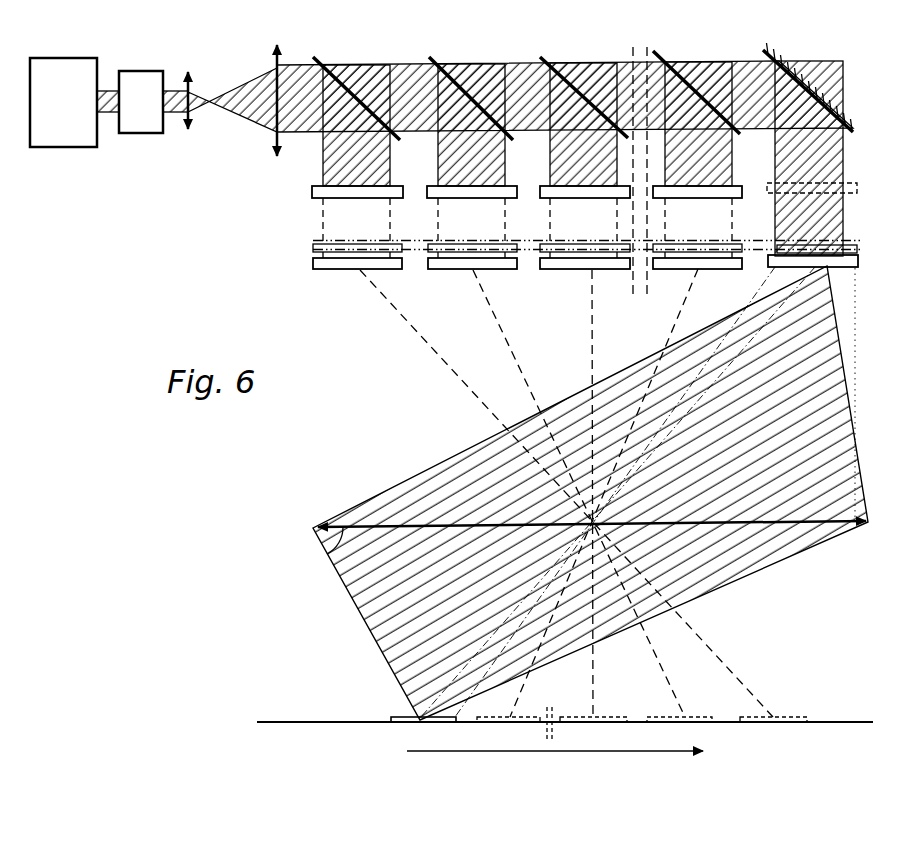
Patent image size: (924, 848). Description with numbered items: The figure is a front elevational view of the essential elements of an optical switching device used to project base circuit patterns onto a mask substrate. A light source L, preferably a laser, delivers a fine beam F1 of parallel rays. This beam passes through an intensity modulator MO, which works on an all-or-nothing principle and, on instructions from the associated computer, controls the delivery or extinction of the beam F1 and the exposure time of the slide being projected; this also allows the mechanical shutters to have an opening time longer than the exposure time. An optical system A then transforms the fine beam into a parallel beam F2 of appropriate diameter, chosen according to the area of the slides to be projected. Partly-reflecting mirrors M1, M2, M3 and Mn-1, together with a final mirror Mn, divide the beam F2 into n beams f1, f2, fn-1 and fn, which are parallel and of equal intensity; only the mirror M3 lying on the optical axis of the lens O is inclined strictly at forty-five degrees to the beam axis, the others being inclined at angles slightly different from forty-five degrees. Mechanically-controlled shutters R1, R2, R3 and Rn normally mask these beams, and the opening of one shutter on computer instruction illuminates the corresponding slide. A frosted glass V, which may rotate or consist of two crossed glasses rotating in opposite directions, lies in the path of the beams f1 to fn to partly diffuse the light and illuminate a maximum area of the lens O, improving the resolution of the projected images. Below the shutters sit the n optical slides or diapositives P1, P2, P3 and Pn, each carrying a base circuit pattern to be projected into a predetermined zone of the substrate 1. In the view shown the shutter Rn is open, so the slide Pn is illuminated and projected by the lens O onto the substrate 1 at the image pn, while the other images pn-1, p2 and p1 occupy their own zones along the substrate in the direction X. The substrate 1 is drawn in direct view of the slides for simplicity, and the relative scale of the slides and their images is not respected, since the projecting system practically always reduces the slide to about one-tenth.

The light source L is at (54, 135).
The fine beam F1 is at (110, 113).
The intensity modulator MO is at (138, 115).
The beam expander lens system A is at (277, 153).
The parallel beam F2 is at (302, 120).
The partly-reflecting mirror M1 is at (318, 56).
The partly-reflecting mirror M2 is at (434, 56).
The partly-reflecting mirror M3 is at (545, 56).
The partly-reflecting mirror Mn-1 is at (656, 50).
The mirror Mn is at (857, 132).
The partial beam f1 is at (380, 163).
The partial beam f2 is at (490, 160).
The partial beam fn-1 is at (720, 160).
The partial beam fn is at (835, 160).
The mechanically-controlled shutter R1 is at (313, 193).
The mechanically-controlled shutter R2 is at (428, 193).
The mechanically-controlled shutter R3 is at (541, 193).
The mechanically-controlled shutter Rn is at (858, 188).
The frosted glass V is at (862, 243).
The optical slide P1 is at (316, 265).
The optical slide P2 is at (436, 269).
The optical slide P3 is at (548, 269).
The optical slide Pn is at (848, 267).
The lens O is at (331, 570).
The substrate 1 is at (342, 720).
The projected image pn is at (405, 720).
The projected image pn-1 is at (488, 722).
The projected image p2 is at (700, 722).
The projected image p1 is at (790, 722).
The scan direction X is at (564, 757).